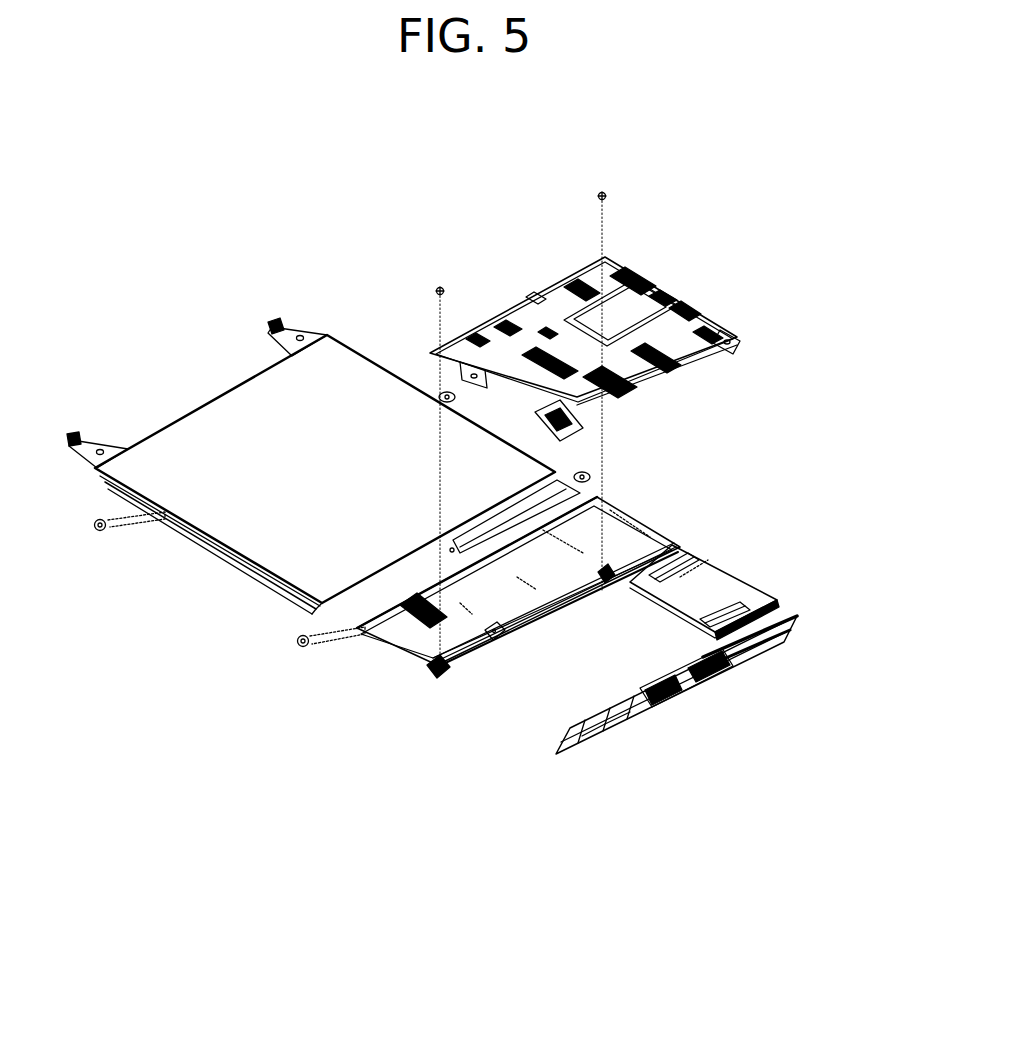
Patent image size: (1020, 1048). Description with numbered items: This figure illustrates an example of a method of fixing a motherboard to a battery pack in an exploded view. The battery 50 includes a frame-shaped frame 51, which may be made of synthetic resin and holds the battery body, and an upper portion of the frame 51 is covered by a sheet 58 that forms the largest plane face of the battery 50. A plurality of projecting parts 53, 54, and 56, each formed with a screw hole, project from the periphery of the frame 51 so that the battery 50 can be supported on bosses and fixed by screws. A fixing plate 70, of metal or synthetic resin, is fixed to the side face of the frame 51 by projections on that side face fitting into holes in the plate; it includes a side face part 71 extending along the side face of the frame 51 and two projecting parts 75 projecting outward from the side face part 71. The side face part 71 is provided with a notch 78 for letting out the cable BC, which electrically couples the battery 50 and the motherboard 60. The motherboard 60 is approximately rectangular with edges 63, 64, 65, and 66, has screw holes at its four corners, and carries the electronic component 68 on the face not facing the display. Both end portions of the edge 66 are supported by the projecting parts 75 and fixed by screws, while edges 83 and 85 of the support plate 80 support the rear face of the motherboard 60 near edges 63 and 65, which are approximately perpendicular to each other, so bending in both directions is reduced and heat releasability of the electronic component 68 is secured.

The battery 50 is at (185, 547).
The frame 51 is at (253, 580).
The projecting parts 53 is at (442, 394).
The projecting parts 54 is at (100, 532).
The projecting parts 56 is at (288, 325).
The sheet 58 is at (352, 385).
The motherboard 60 is at (657, 285).
The edge 63 is at (730, 335).
The edge 64 is at (466, 386).
The edge 65 is at (700, 367).
The edge 66 is at (558, 280).
The electronic component 68 is at (524, 290).
The fixing plate 70 is at (665, 535).
The side face part 71 is at (532, 636).
The projecting parts 75 is at (440, 682).
The notch 78 is at (490, 642).
The support plate 80 is at (805, 628).
The edge 83 is at (725, 560).
The edge 85 is at (672, 700).
The cable BC is at (395, 630).